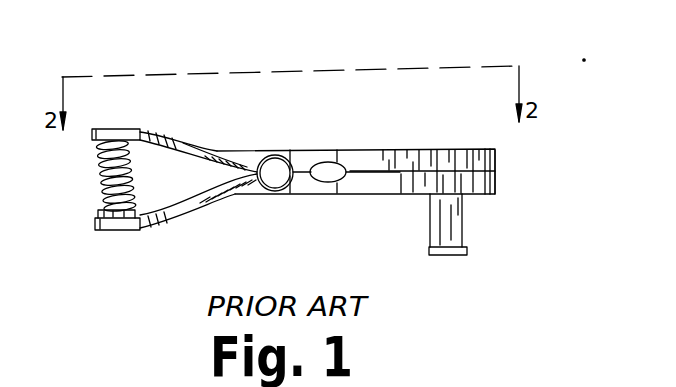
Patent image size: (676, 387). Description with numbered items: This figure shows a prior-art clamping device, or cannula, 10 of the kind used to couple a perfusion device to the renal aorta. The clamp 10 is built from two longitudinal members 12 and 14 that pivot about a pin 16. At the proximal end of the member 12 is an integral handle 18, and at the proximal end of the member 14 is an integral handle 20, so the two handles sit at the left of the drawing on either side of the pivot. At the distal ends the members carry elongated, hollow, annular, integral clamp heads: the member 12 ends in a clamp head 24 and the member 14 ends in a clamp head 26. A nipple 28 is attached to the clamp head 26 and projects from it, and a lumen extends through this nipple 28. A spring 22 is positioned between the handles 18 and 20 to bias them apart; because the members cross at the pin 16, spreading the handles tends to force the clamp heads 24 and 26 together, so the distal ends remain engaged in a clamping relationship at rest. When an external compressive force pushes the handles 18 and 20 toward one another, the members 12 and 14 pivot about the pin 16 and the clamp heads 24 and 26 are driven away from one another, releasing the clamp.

The clamping device (cannula) 10 is at (248, 45).
The longitudinal member 12 is at (341, 149).
The longitudinal member 14 is at (342, 196).
The pin 16 is at (272, 196).
The integral handle 18 is at (113, 130).
The integral handle 20 is at (118, 232).
The spring 22 is at (103, 174).
The clamp head 24 is at (496, 158).
The clamp head 26 is at (496, 182).
The nipple 28 is at (463, 228).